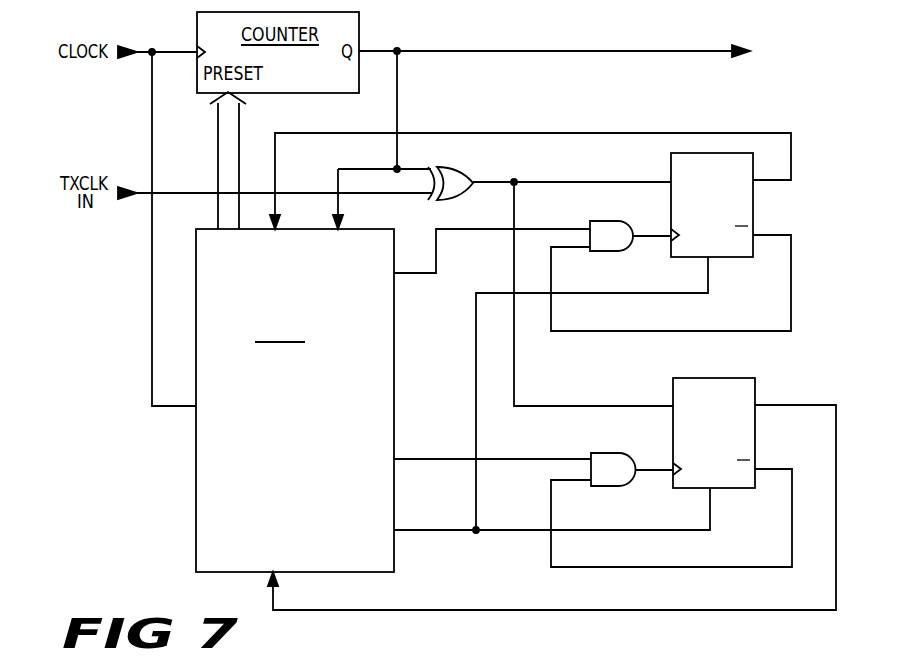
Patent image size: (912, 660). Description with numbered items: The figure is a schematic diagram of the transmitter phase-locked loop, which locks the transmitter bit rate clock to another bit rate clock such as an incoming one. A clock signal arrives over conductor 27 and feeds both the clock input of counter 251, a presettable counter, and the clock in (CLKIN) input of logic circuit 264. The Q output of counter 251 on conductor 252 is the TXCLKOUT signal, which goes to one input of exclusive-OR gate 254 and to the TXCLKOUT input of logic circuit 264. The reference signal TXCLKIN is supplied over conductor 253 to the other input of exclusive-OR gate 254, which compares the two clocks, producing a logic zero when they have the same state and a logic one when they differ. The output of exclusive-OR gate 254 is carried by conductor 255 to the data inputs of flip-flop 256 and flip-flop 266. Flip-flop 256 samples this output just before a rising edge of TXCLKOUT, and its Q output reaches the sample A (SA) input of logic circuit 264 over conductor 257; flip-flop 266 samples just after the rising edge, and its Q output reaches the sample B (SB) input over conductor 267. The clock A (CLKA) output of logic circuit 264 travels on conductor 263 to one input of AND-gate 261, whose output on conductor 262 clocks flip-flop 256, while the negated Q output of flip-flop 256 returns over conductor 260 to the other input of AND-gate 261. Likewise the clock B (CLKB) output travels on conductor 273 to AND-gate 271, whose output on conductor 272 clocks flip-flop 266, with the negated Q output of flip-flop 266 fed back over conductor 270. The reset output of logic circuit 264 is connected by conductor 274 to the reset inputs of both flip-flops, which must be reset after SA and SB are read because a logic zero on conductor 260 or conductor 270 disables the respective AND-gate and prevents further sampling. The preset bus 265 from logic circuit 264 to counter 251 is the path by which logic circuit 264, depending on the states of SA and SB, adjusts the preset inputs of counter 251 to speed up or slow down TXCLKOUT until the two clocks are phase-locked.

The conductor 27 is at (186, 50).
The counter 251 is at (359, 34).
The conductor 252 is at (385, 52).
The conductor 253 is at (165, 193).
The exclusive-OR gate 254 is at (448, 168).
The conductor 255 is at (543, 181).
The flip-flop 256 is at (671, 160).
The conductor 257 is at (600, 133).
The conductor 260 is at (790, 276).
The AND-gate 261 is at (613, 221).
The conductor 262 is at (655, 237).
The conductor 263 is at (452, 230).
The logic circuit 264 is at (395, 327).
The preset data bus 265 is at (218, 140).
The flip-flop 266 is at (673, 383).
The conductor 267 is at (772, 405).
The conductor 270 is at (722, 567).
The AND-gate 271 is at (614, 453).
The conductor 272 is at (648, 472).
The conductor 273 is at (500, 459).
The conductor 274 is at (492, 532).